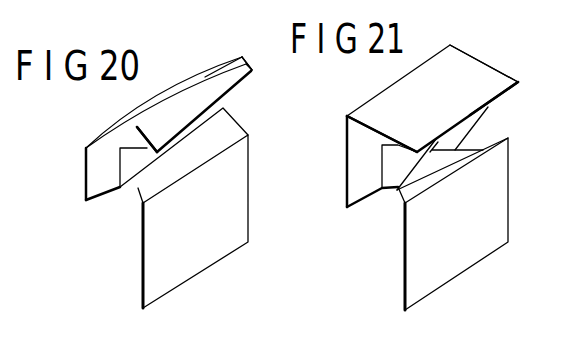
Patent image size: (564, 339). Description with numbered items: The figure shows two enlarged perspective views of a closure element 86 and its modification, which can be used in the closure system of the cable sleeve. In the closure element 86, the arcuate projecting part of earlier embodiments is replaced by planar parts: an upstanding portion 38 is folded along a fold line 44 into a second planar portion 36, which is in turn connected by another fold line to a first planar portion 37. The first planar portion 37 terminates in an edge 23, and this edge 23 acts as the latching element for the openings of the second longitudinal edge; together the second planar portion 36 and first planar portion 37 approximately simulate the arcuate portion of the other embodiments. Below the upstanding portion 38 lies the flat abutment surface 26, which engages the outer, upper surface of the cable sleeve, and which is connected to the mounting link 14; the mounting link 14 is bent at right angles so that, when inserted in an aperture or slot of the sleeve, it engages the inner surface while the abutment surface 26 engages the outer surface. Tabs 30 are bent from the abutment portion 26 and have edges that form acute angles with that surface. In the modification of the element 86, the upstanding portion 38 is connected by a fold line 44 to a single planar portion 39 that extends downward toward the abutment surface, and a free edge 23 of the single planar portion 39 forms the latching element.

In FIG. 20, the mounting link 14 is at (247, 218).
In FIG. 21, the mounting link 14 is at (500, 208).
In FIG. 20, the edge 23 is at (249, 80).
In FIG. 21, the edge 23 is at (500, 90).
In FIG. 20, the abutment surface 26 is at (223, 145).
In FIG. 21, the abutment surface 26 is at (483, 150).
In FIG. 20, the tabs 30 is at (131, 188).
In FIG. 21, the tabs 30 is at (389, 178).
In FIG. 20, the second planar portion 36 is at (195, 77).
In FIG. 20, the first planar portion 37 is at (251, 73).
In FIG. 20, the upstanding portion 38 is at (97, 167).
In FIG. 21, the upstanding portion 38 is at (354, 148).
In FIG. 21, the single planar portion 39 is at (495, 80).
In FIG. 20, the fold line 44 is at (147, 108).
In FIG. 21, the fold line 44 is at (396, 82).
In FIG. 20, the closure element 86 is at (122, 124).
In FIG. 21, the closure element 86 is at (368, 99).